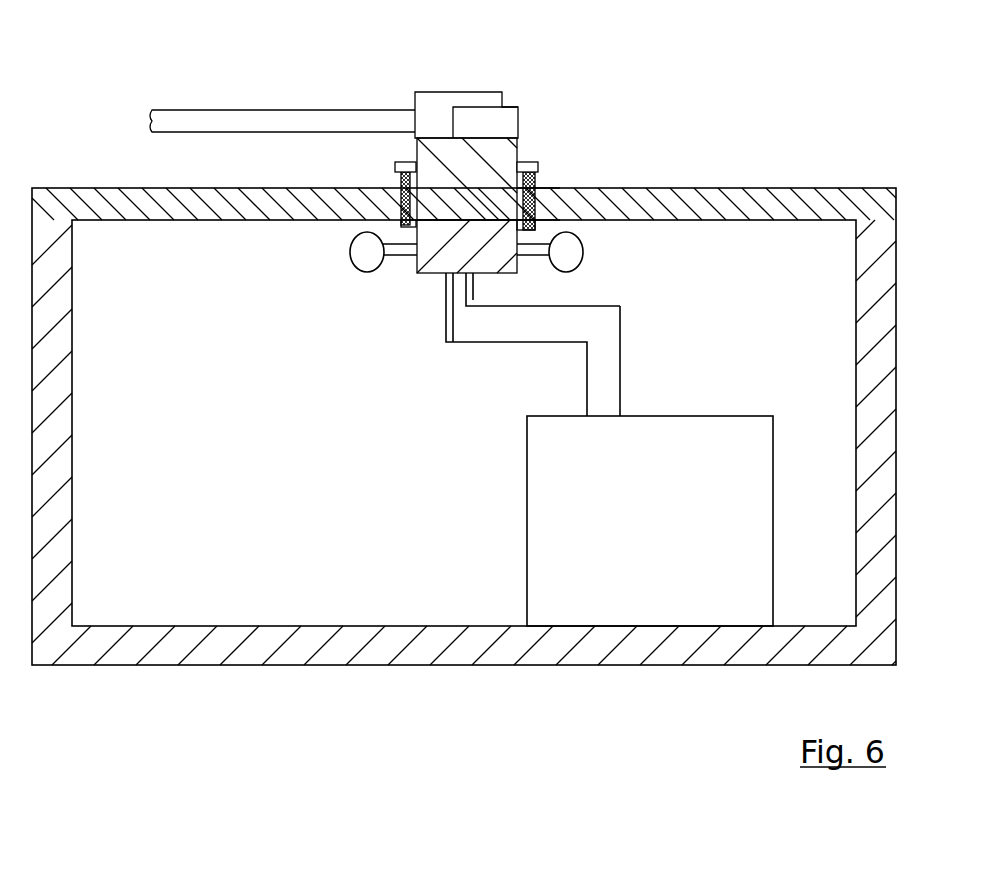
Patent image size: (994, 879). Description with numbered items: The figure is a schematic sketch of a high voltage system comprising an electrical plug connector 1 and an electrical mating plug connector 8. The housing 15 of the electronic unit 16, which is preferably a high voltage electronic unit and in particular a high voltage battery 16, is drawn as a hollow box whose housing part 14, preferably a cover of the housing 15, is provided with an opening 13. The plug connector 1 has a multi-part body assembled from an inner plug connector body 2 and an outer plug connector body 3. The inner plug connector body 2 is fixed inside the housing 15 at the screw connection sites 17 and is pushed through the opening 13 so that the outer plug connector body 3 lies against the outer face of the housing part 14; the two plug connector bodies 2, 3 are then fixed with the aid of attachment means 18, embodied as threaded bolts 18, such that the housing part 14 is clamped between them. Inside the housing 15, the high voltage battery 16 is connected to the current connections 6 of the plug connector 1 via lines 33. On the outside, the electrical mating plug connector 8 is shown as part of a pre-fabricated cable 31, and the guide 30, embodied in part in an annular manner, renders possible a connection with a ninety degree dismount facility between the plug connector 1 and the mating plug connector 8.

The electrical plug connector 1 is at (370, 173).
The inner plug connector body 2 is at (430, 263).
The outer plug connector body 3 is at (525, 155).
The current connections 6 is at (475, 292).
The electrical mating plug connector 8 is at (466, 82).
The opening 13 is at (540, 204).
The housing part 14 is at (858, 199).
The housing 15 is at (879, 359).
The electronic unit 16 is at (540, 527).
The screw connection sites 17 is at (356, 253).
The attachment means 18 is at (398, 163).
The guide 30 is at (480, 115).
The pre-fabricated cable 31 is at (262, 120).
The lines 33 is at (620, 350).